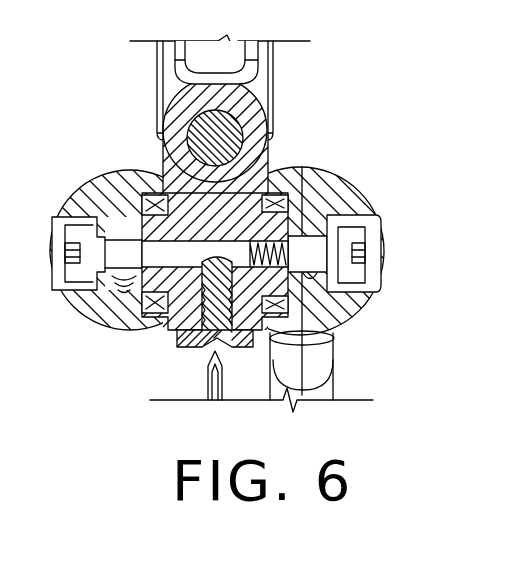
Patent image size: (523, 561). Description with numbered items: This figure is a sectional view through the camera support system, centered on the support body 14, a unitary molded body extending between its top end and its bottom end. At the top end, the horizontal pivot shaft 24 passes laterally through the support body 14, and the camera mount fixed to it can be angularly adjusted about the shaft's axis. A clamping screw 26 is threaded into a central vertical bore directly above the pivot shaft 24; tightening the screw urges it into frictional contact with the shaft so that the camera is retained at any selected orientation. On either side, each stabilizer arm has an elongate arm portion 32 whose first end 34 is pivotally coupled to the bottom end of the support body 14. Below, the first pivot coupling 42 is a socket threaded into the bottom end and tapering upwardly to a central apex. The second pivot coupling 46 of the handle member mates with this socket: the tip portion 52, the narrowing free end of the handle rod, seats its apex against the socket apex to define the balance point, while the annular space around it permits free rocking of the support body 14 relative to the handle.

The support body 14 is at (237, 182).
The pivot shaft 24 is at (227, 130).
The clamping screw 26 is at (215, 92).
The first end 34 is at (92, 194).
The arm portion 32 is at (325, 362).
The first pivot coupling 42 is at (200, 349).
The tip portion 52 is at (203, 372).
The second pivot coupling 46 is at (238, 388).